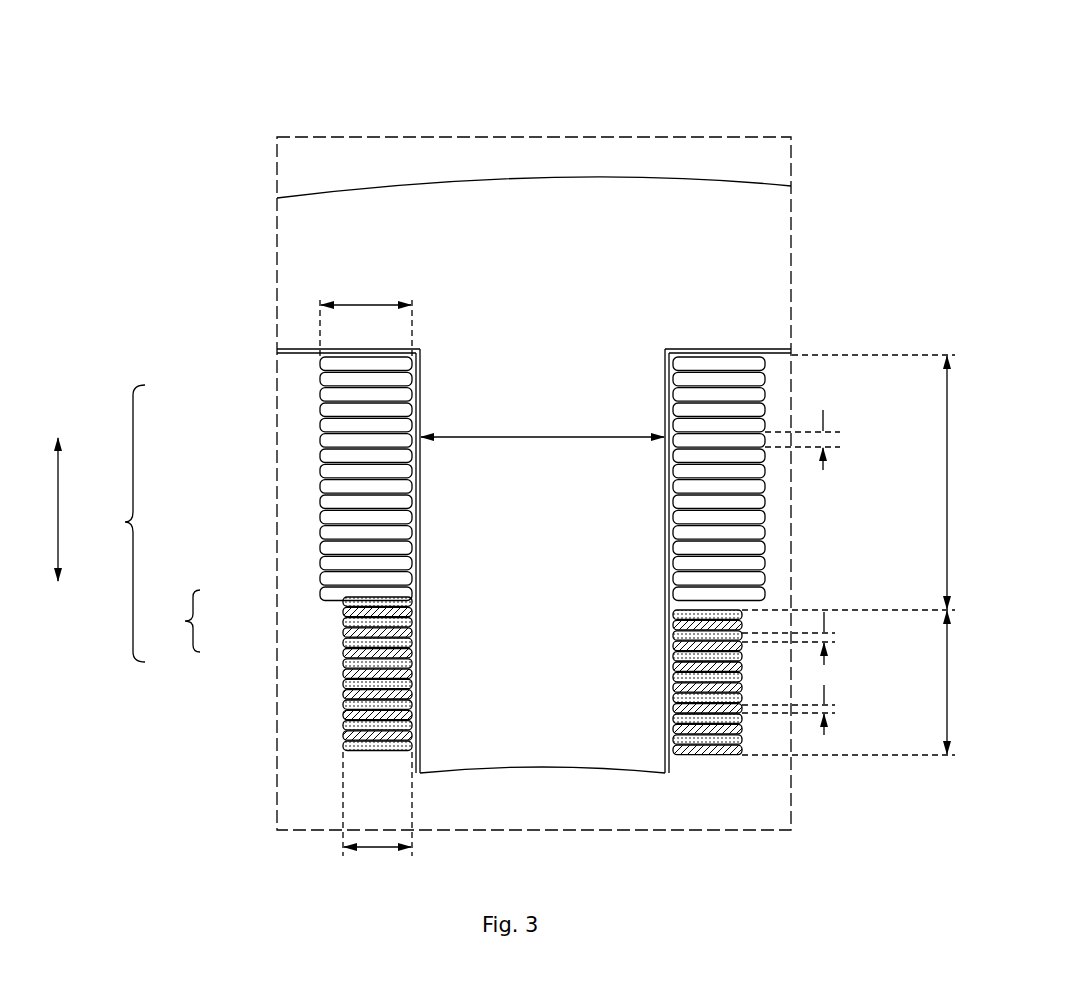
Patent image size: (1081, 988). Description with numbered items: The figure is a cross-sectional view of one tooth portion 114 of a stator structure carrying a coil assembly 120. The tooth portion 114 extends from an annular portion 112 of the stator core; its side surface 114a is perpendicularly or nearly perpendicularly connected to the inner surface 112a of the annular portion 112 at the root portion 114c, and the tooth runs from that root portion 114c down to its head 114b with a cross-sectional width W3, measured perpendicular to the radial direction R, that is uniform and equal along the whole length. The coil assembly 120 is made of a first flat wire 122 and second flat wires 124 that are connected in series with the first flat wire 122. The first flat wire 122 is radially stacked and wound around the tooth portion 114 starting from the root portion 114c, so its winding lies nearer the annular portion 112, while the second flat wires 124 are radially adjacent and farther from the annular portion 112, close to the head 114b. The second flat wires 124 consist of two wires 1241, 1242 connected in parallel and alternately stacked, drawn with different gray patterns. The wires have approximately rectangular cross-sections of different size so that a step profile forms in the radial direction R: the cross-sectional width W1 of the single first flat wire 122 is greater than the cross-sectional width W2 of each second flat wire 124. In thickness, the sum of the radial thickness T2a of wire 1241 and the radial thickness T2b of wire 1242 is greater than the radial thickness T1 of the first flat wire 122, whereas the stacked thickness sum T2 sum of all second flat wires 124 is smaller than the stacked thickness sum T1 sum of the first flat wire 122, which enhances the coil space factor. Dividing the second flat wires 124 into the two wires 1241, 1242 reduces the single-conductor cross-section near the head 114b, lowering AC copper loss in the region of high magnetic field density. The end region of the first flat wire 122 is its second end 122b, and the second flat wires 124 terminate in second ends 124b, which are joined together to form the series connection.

The annular portion 112 is at (542, 208).
The inner surface of the annular portion 112a is at (731, 339).
The tooth portion 114 is at (565, 575).
The side surface 114a is at (657, 746).
The head 114b is at (546, 758).
The root portion 114c is at (465, 360).
The coil assembly 120 is at (484, 539).
The first flat wire 122 is at (318, 410).
The second end of the first flat wire 122b is at (770, 601).
The second flat wires 124 is at (515, 664).
The second flat wire 1241 is at (340, 607).
The second flat wire 1242 is at (340, 637).
The second ends of the second flat wires 124b is at (752, 617).
The cross-sectional width of the first flat wire W1 is at (366, 314).
The cross-sectional width of the second flat wire W2 is at (377, 818).
The cross-sectional width of the tooth portion W3 is at (542, 420).
The cross-sectional radial thickness of the first flat wire T1 is at (814, 440).
The cross-sectional radial thickness stacked sum of the first flat wire T1 sum is at (915, 482).
The cross-sectional radial thickness of the second flat wire 1241 T2a is at (809, 638).
The cross-sectional radial thickness of the second flat wire 1242 T2b is at (810, 710).
The cross-sectional radial thickness stacked sum of the second flat wires T2 sum is at (890, 682).
The radial direction R is at (42, 509).